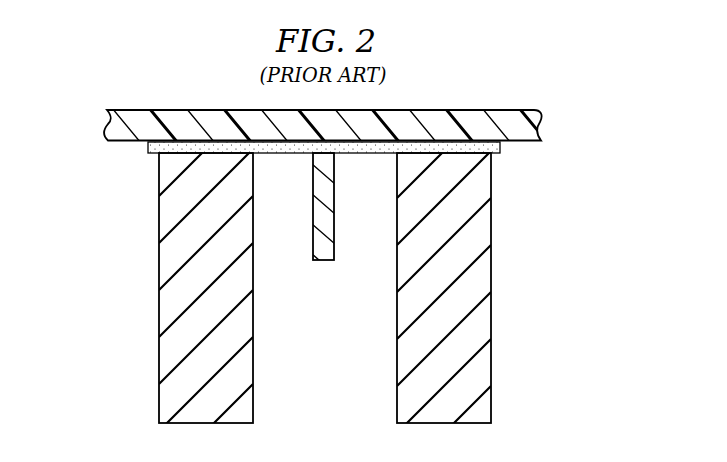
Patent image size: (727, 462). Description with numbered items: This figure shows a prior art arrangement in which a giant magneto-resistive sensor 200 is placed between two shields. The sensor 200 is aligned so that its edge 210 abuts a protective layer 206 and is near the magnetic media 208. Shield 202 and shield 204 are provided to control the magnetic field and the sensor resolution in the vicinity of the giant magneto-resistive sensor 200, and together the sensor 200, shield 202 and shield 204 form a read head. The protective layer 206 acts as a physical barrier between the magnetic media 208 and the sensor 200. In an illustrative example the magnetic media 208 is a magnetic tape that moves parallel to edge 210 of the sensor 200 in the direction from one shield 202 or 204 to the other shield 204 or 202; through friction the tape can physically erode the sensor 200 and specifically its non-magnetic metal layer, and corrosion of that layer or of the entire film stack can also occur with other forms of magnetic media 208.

The giant magneto-resistive sensor 200 is at (320, 261).
The shield 202 is at (159, 313).
The shield 204 is at (491, 274).
The protective layer 206 is at (148, 152).
The magnetic media 208 is at (107, 122).
The edge of giant magneto-resistive sensor 210 is at (303, 167).